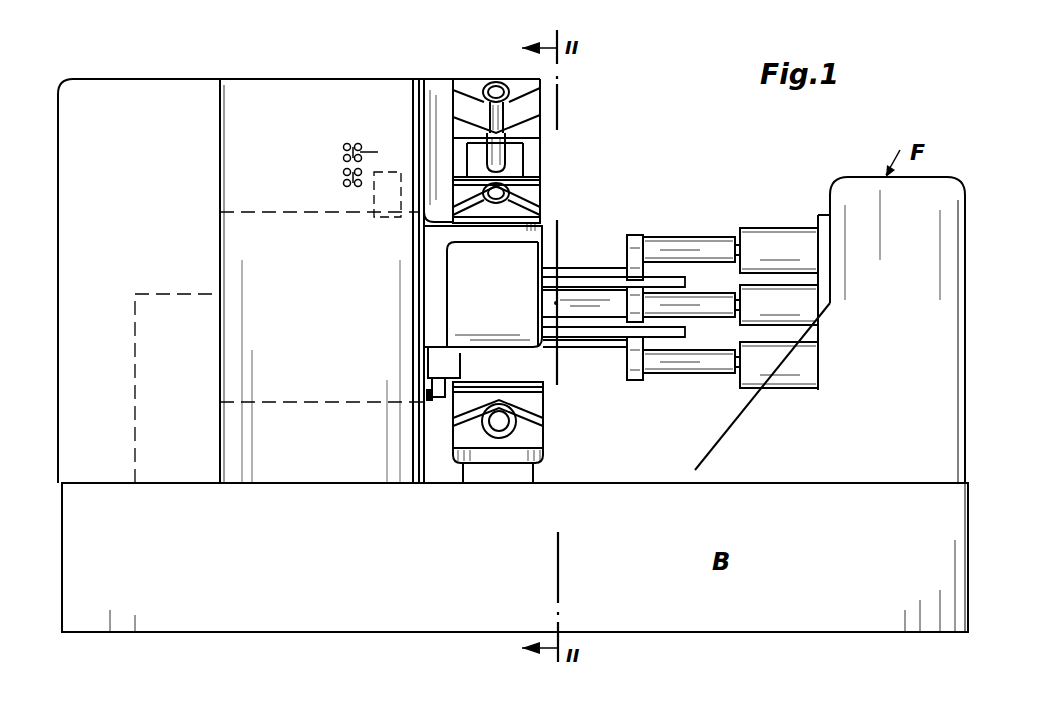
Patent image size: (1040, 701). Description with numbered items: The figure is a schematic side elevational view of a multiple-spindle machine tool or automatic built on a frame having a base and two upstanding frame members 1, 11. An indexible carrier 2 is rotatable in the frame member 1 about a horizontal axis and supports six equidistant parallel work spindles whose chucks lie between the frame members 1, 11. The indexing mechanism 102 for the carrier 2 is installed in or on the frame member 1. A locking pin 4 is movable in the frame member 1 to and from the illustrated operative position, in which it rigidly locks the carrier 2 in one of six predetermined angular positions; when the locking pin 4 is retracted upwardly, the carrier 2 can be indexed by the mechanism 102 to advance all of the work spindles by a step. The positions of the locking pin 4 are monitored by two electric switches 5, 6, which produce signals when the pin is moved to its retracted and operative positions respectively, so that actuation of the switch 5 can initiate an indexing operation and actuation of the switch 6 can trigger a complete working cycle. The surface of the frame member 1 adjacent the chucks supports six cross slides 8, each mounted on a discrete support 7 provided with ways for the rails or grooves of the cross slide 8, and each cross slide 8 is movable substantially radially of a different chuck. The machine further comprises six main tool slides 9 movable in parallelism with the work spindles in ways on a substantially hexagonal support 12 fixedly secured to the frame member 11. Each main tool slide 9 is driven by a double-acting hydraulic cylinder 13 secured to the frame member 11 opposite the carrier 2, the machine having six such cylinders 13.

The frame member 1 is at (252, 95).
The indexible carrier 2 is at (428, 402).
The locking pin 4 is at (387, 190).
The electric switch 5 is at (352, 142).
The electric switch 6 is at (343, 168).
The support 7 is at (437, 100).
The cross slide 8 is at (518, 162).
The main tool slide 9 is at (573, 338).
The frame member 11 is at (950, 222).
The hexagonal support 12 is at (665, 288).
The hydraulic cylinder 13 is at (762, 358).
The indexing mechanism 102 is at (165, 290).